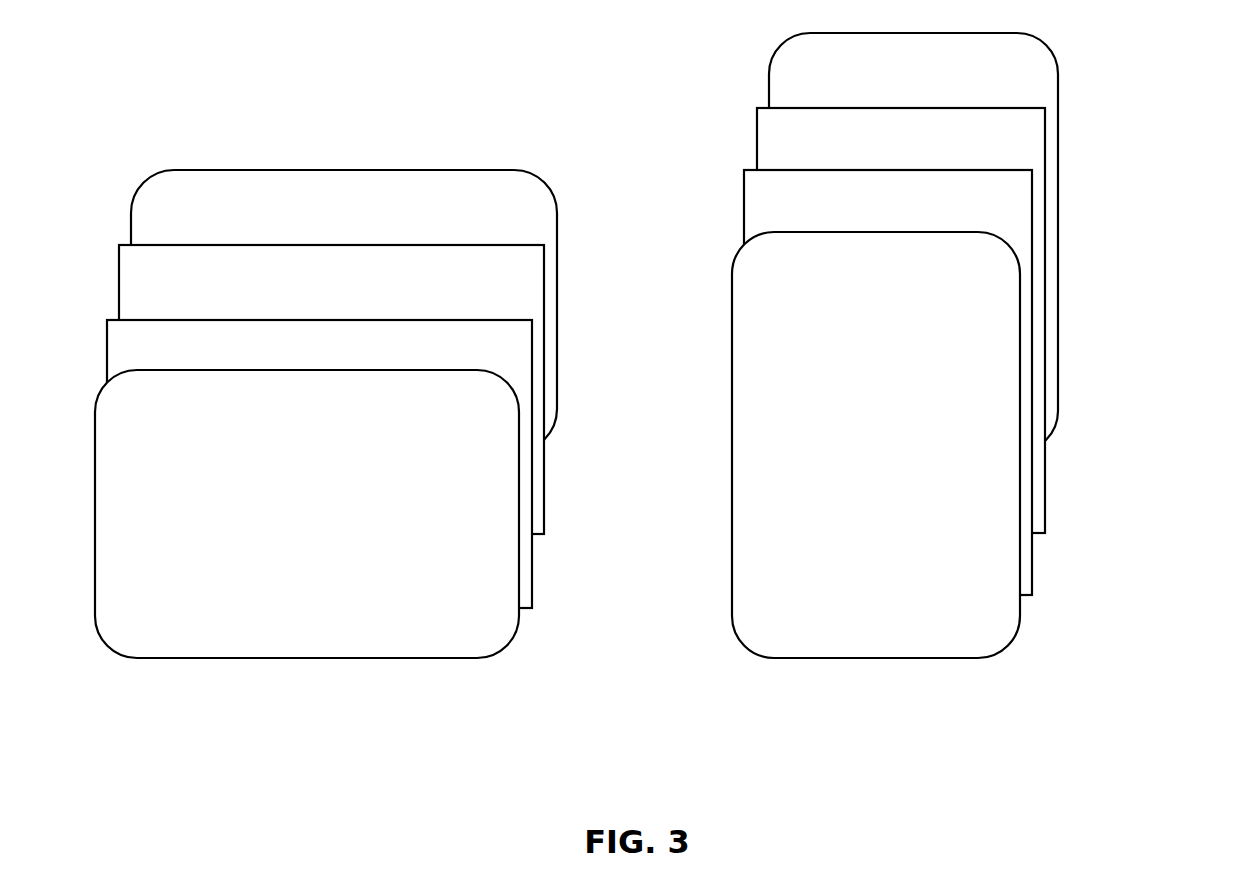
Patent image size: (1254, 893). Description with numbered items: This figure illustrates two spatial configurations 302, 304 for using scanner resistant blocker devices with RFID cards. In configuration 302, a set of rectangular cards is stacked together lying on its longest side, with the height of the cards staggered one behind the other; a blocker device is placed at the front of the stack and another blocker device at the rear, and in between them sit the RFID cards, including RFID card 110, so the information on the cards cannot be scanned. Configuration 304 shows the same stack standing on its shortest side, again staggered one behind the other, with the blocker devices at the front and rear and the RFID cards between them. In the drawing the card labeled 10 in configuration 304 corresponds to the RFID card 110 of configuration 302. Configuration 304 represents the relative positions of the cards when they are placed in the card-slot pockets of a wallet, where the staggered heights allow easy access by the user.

The RFID card 110 is at (560, 533).
The card 10 is at (1059, 519).
The configuration 302 is at (412, 474).
The configuration 304 is at (970, 400).